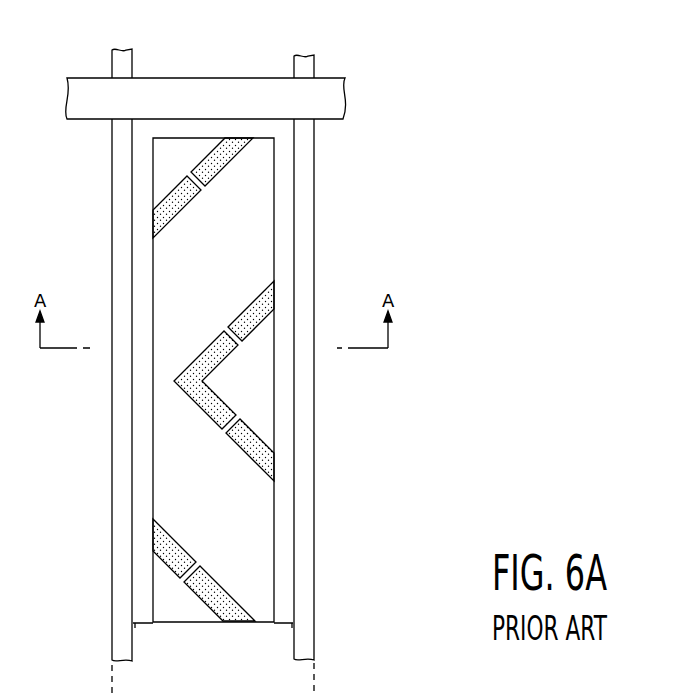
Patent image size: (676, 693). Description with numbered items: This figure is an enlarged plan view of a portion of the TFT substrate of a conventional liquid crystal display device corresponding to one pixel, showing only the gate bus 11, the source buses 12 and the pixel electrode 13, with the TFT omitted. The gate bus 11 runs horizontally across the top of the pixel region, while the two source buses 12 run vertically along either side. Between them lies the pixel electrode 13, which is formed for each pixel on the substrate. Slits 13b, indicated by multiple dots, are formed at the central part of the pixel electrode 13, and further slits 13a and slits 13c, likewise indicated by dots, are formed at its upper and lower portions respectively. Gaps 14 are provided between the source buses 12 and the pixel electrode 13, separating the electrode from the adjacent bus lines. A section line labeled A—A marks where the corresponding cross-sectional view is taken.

The gate bus 11 is at (223, 97).
The source buses 12 is at (120, 164).
The pixel electrode 13 is at (253, 237).
The slits 13a is at (213, 168).
The slits 13b is at (232, 328).
The slits 13c is at (220, 600).
The gaps 14 is at (135, 628).